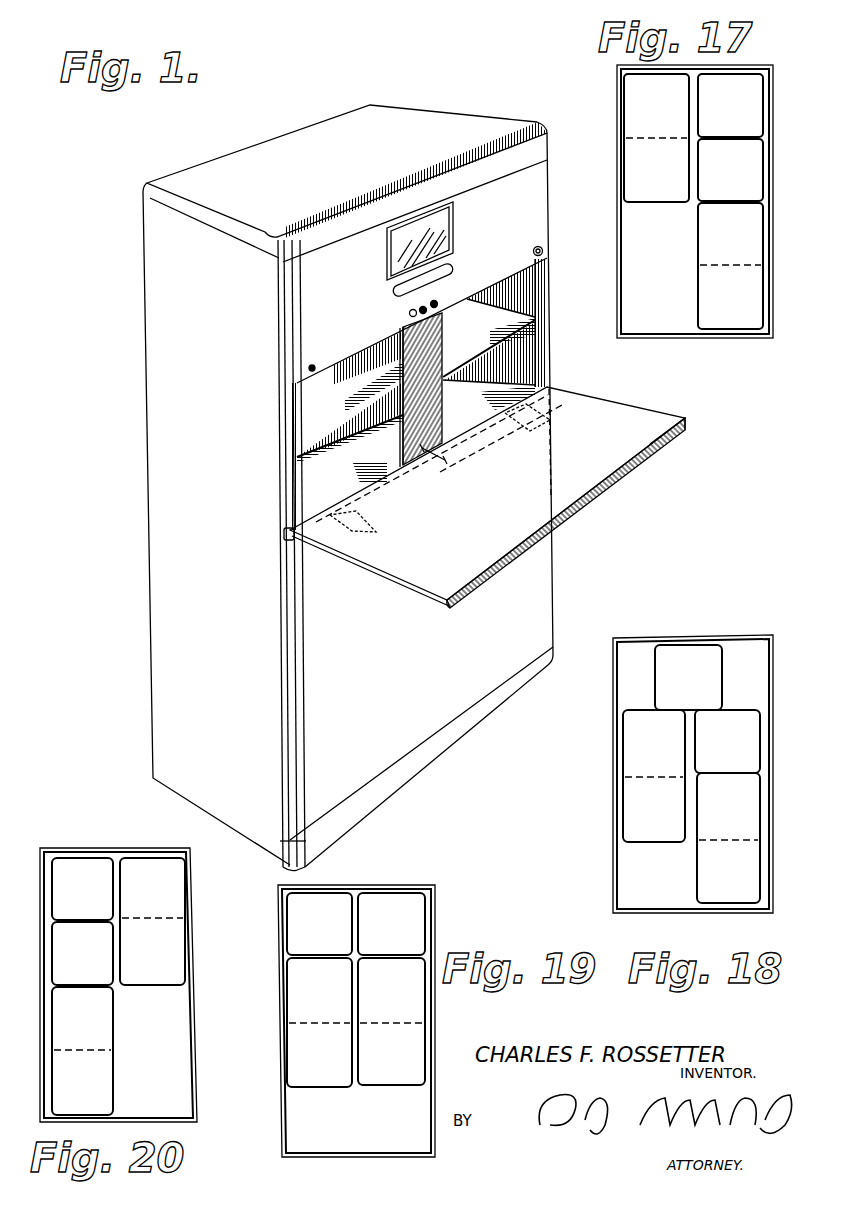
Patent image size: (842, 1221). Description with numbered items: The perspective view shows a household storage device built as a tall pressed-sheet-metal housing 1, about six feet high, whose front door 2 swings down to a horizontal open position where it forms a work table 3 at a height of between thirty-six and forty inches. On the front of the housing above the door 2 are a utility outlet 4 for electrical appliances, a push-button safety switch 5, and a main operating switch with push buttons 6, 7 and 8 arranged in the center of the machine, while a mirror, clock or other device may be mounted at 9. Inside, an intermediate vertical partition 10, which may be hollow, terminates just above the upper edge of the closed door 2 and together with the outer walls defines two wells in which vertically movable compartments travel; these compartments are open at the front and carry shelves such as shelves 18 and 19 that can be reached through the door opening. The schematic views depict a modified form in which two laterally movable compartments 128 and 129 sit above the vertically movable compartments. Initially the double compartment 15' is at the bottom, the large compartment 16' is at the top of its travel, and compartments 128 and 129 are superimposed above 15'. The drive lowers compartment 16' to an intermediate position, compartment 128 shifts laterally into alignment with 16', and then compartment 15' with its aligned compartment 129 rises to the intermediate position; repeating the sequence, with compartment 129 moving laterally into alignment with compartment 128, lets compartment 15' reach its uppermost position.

In FIG. 1, the housing 1 is at (162, 380).
In FIG. 1, the door 2 is at (690, 423).
In FIG. 1, the work table 3 is at (623, 405).
In FIG. 1, the utility outlet 4 is at (547, 252).
In FIG. 1, the safety switch 5 is at (314, 367).
In FIG. 1, the push button 6 is at (410, 313).
In FIG. 1, the push button 7 is at (425, 313).
In FIG. 1, the push button 8 is at (437, 306).
In FIG. 1, the mirror 9 is at (455, 237).
In FIG. 1, the intermediate vertical partition 10 is at (443, 420).
In FIG. 1, the shelf 18 is at (505, 393).
In FIG. 1, the shelf 19 is at (512, 322).
In FIG. 17, the laterally movable compartment 128 is at (748, 55).
In FIG. 18, the laterally movable compartment 128 is at (693, 653).
In FIG. 19, the laterally movable compartment 128 is at (297, 908).
In FIG. 20, the laterally movable compartment 128 is at (97, 973).
In FIG. 17, the laterally movable compartment 129 is at (712, 183).
In FIG. 18, the laterally movable compartment 129 is at (750, 740).
In FIG. 19, the laterally movable compartment 129 is at (410, 918).
In FIG. 20, the laterally movable compartment 129 is at (92, 840).
In FIG. 19, the double compartment 15' is at (411, 1021).
In FIG. 20, the double compartment 15' is at (172, 921).
In FIG. 19, the large compartment 16' is at (296, 1022).
In FIG. 20, the large compartment 16' is at (103, 1051).